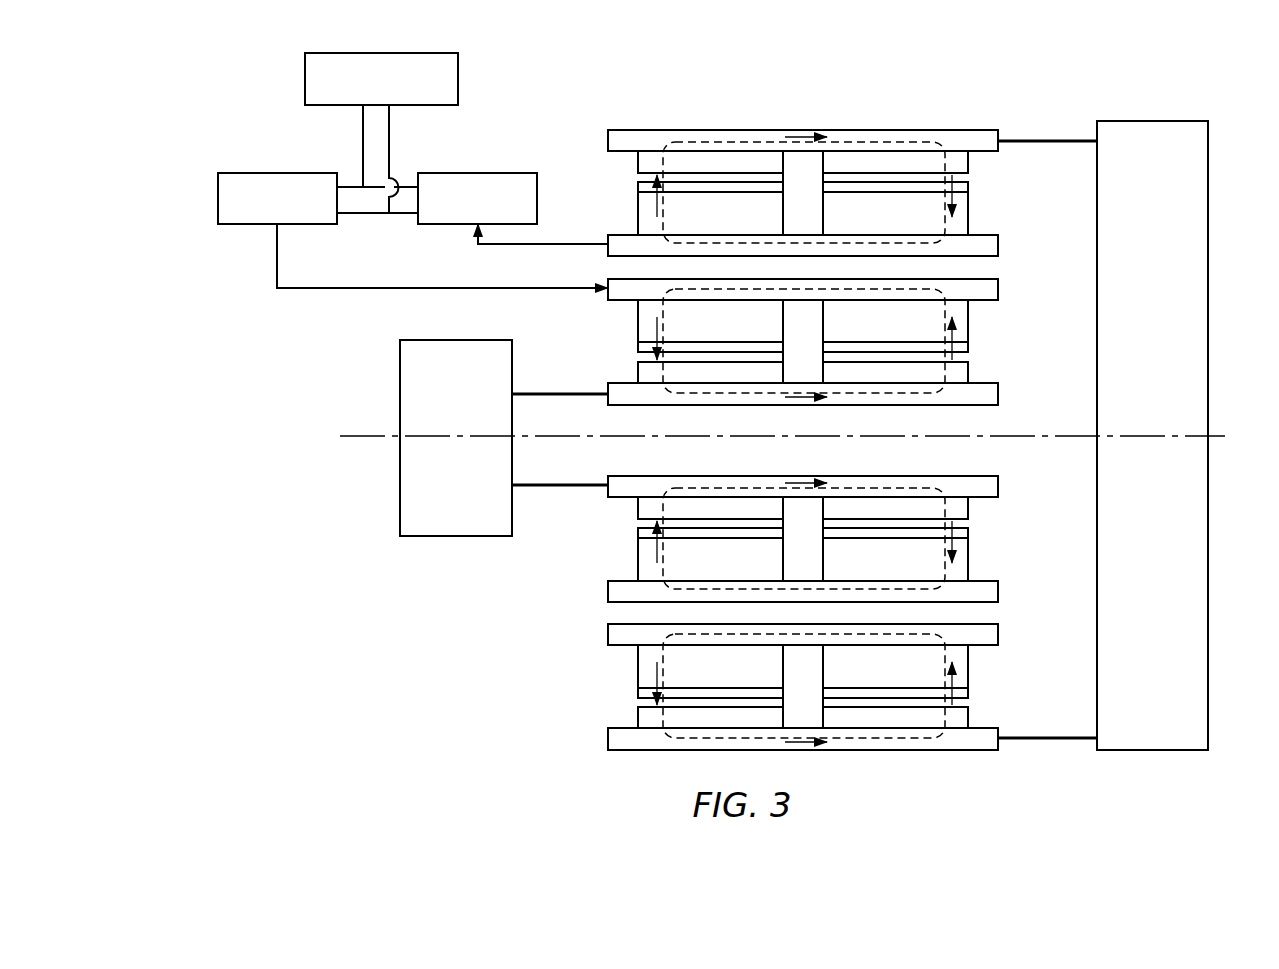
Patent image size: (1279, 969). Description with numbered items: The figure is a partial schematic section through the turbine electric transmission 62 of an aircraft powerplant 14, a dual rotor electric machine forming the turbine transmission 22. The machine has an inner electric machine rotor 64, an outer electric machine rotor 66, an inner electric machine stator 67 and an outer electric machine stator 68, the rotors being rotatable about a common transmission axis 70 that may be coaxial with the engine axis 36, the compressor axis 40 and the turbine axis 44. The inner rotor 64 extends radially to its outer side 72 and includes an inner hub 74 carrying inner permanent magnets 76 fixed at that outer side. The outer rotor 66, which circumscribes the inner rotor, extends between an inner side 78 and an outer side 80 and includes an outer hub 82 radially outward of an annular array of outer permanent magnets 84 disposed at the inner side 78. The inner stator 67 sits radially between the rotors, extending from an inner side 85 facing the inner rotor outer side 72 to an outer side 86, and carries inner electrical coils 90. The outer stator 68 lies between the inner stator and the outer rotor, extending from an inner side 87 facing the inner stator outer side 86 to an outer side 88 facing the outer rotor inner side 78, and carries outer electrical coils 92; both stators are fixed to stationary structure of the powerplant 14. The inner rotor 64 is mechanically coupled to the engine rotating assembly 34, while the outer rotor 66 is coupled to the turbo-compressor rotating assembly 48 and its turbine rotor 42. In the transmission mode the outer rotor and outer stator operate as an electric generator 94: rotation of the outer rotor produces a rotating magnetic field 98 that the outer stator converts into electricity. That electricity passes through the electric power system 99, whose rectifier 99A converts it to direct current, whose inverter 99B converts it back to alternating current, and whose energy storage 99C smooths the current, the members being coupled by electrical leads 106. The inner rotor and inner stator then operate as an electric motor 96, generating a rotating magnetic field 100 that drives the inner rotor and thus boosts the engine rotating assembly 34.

The aircraft powerplant 14 is at (1178, 50).
The turbine transmission 22 is at (812, 401).
The turbine electric transmission 62 is at (1005, 110).
The engine rotating assembly 34 is at (441, 390).
The engine axis 36 is at (717, 467).
The compressor axis 40 is at (717, 467).
The turbine axis 44 is at (717, 467).
The transmission axis 70 is at (378, 437).
The turbine rotor 42 is at (1152, 435).
The turbo-compressor rotating assembly 48 is at (1122, 218).
The inner electric machine rotor 64 is at (1007, 372).
The outer electric machine rotor 66 is at (987, 161).
The inner electric machine stator 67 is at (990, 310).
The outer electric machine stator 68 is at (992, 228).
The outer side of the inner rotor 72 is at (965, 357).
The inner hub 74 is at (975, 395).
The inner permanent magnets 76 is at (722, 372).
The inner side of the outer rotor 78 is at (968, 183).
The outer side of the outer rotor 80 is at (803, 117).
The outer hub 82 is at (907, 137).
The outer permanent magnets 84 is at (722, 160).
The inner side of the inner stator 85 is at (640, 355).
The outer side of the inner stator 86 is at (608, 280).
The inner side of the outer stator 87 is at (642, 257).
The outer side of the outer stator 88 is at (650, 180).
The inner electrical coils 90 is at (700, 336).
The outer electrical coils 92 is at (700, 227).
The electric generator 94 is at (595, 200).
The electric motor 96 is at (598, 332).
The rotating magnetic field 98 is at (757, 142).
The rotating magnetic field 100 is at (693, 398).
The electric power system 99 is at (255, 100).
The rectifier 99A is at (468, 173).
The inverter 99B is at (277, 173).
The energy storage 99C is at (382, 53).
The electrical leads 106 is at (389, 142).